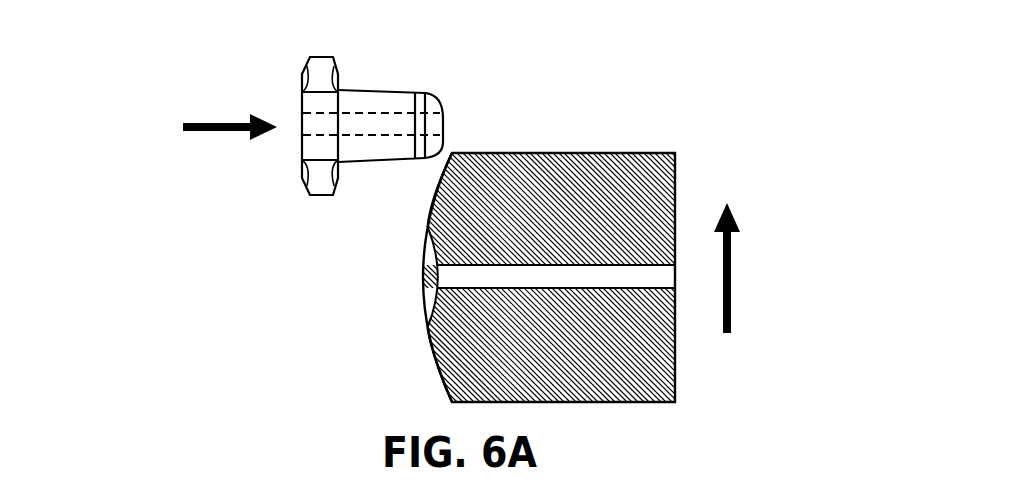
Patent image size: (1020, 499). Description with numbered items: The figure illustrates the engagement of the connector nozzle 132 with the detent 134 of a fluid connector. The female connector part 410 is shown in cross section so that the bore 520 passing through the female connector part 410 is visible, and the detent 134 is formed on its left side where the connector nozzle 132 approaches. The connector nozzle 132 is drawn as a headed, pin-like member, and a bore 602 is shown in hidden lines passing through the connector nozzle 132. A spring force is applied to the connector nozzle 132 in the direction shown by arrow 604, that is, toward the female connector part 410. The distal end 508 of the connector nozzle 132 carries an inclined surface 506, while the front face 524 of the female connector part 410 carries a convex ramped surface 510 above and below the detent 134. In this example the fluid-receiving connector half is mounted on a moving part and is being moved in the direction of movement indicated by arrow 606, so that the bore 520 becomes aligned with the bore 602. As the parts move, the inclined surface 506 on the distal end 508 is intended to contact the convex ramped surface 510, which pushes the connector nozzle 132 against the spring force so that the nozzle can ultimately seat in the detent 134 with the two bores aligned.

The connector nozzle 132 is at (347, 90).
The bore 602 is at (360, 113).
The distal end 508 is at (457, 82).
The inclined surface 506 is at (440, 150).
The convex ramped surface 510 is at (433, 198).
The bore 520 is at (437, 273).
The detent 134 is at (423, 298).
The front face 524 is at (355, 315).
The female connector part 410 is at (633, 150).
The arrow (spring force) 604 is at (204, 131).
The arrow (direction of movement) 606 is at (731, 268).